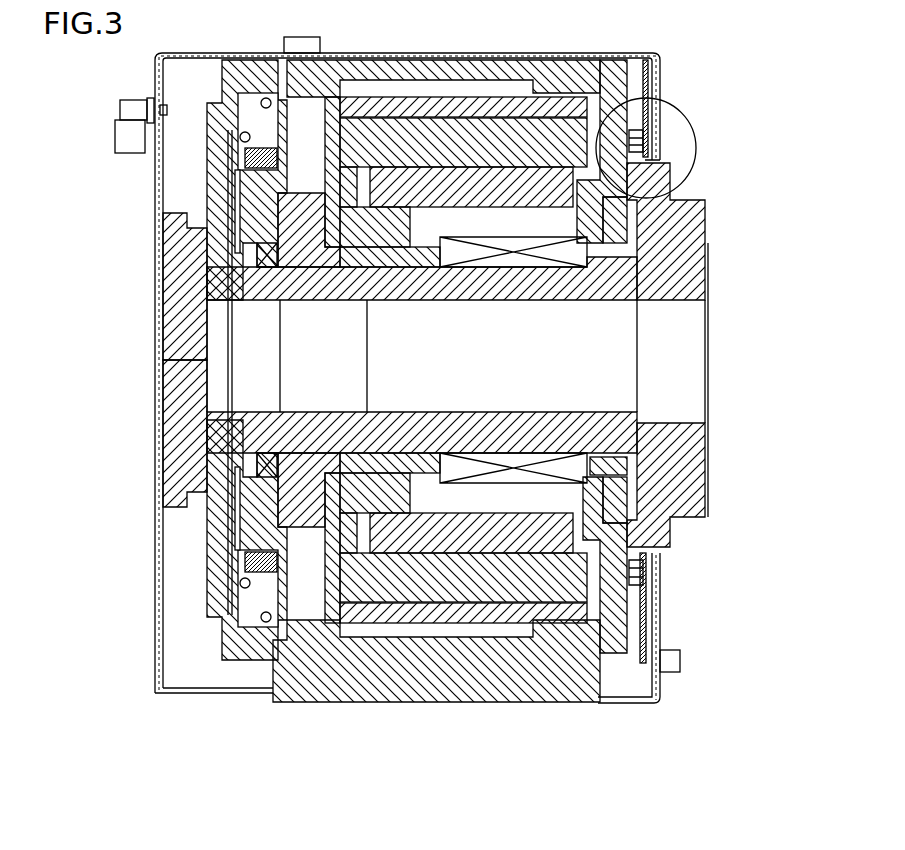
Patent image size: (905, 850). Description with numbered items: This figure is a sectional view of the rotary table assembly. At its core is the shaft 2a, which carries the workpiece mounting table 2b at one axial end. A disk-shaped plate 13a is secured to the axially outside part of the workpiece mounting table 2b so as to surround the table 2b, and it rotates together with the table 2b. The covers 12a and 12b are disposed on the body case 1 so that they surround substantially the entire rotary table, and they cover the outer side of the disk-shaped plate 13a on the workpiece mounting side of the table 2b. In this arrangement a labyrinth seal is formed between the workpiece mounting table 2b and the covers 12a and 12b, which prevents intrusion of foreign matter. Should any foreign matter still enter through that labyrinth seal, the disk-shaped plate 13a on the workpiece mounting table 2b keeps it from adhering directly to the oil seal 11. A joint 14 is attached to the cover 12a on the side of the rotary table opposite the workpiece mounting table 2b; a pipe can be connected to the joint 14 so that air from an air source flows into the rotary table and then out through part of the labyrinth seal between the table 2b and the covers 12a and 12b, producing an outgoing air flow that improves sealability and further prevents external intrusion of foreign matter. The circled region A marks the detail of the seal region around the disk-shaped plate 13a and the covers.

The body case 1 is at (565, 65).
The cover 12a is at (638, 53).
The disk-shaped plate 13a is at (648, 85).
The detail region A is at (697, 152).
The shaft 2a is at (597, 307).
The workpiece mounting table 2b is at (690, 443).
The oil seal 11 is at (608, 467).
The cover 12b is at (660, 615).
The joint 14 is at (128, 155).